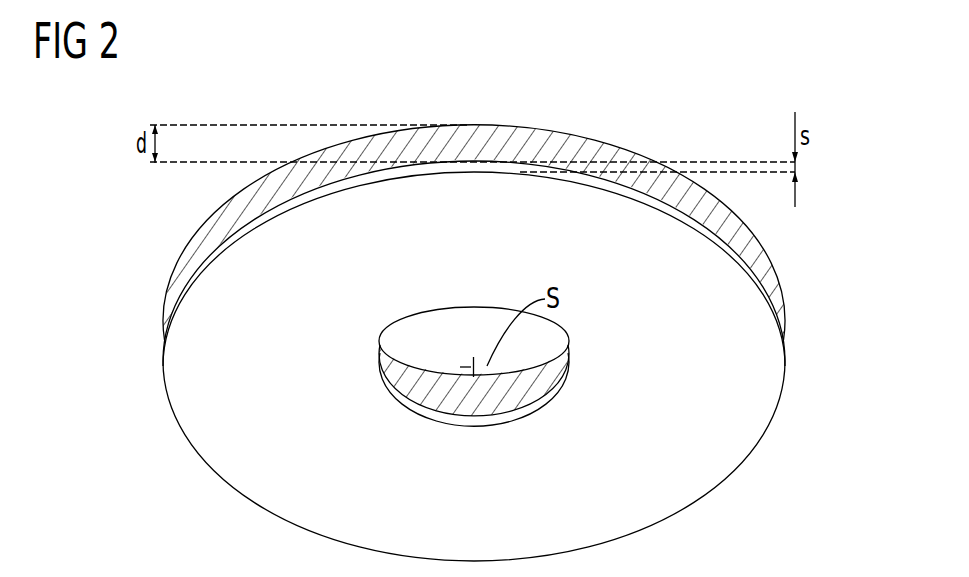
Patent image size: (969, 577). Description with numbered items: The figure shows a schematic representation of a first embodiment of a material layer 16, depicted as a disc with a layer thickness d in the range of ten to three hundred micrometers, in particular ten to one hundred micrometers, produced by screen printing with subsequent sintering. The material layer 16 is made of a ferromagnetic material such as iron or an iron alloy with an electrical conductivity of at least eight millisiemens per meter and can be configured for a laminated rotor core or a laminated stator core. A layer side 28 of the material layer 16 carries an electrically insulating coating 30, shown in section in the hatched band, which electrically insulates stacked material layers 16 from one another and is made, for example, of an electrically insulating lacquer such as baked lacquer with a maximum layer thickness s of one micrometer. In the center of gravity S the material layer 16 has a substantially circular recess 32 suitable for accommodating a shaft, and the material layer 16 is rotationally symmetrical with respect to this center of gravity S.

The material layer 16 is at (474, 319).
The layer side 28 is at (672, 493).
The electrically insulating coating 30 is at (475, 160).
The circular recess 32 is at (475, 327).